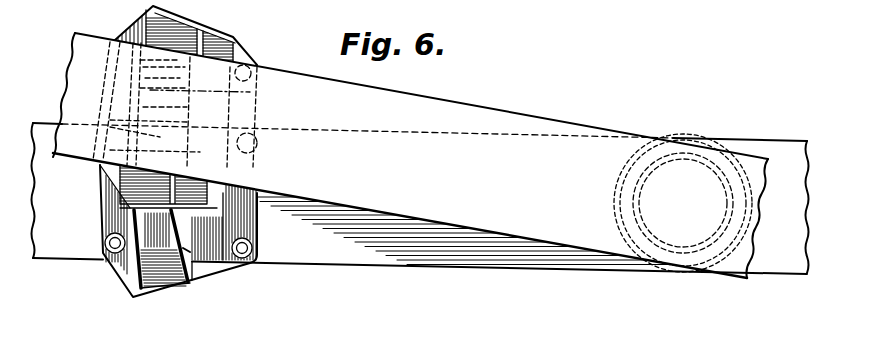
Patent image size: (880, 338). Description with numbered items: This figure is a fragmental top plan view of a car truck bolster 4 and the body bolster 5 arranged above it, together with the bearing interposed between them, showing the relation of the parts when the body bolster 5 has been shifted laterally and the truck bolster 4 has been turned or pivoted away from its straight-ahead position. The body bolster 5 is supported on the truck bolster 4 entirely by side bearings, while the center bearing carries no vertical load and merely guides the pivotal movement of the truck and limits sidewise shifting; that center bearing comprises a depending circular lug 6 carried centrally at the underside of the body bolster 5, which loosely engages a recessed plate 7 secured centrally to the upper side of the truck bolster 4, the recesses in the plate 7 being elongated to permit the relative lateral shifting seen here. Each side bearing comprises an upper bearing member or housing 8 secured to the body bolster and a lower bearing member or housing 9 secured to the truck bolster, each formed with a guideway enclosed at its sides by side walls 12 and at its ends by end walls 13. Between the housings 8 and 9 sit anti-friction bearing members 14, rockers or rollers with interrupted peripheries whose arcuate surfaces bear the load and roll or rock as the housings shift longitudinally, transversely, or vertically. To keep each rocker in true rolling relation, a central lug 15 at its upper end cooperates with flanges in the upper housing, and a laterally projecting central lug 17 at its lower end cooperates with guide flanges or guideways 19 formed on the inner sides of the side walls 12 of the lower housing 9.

The truck bolster 4 is at (60, 248).
The body bolster 5 is at (441, 113).
The depending circular lug 6 is at (695, 150).
The recessed plate 7 is at (728, 152).
The upper bearing member or housing 8 is at (243, 60).
The lower bearing member or housing 9 is at (233, 257).
The side walls 12 is at (142, 292).
The end walls 13 is at (173, 284).
The anti-friction bearing members 14 is at (250, 98).
The central lug 15 is at (187, 257).
The laterally projecting central lug 17 is at (135, 229).
The guide flanges or guideways 19 is at (143, 262).